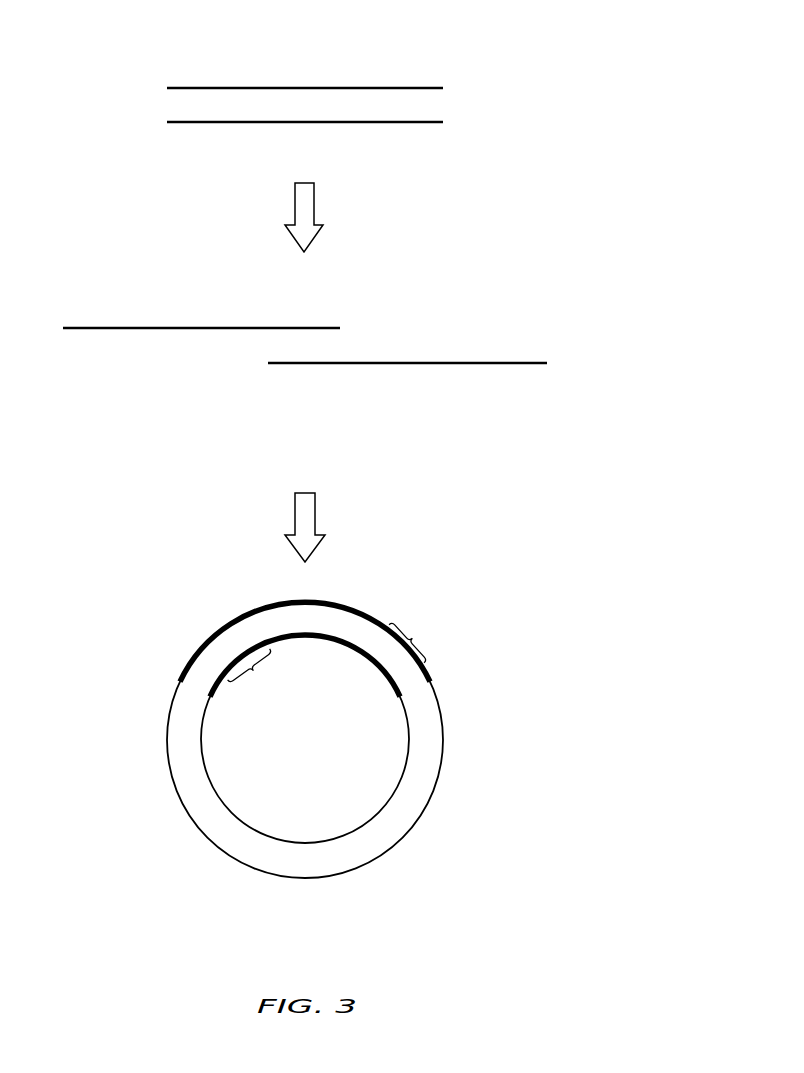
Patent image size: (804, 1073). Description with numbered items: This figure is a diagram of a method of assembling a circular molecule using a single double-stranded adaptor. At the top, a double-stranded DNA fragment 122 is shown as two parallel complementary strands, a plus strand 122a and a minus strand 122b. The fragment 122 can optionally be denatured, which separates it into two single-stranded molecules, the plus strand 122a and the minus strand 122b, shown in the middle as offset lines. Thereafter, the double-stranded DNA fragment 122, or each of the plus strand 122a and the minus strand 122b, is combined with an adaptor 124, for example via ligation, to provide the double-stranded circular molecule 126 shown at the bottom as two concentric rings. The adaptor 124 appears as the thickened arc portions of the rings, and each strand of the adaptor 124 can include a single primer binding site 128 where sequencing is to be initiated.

The double-stranded DNA fragment 122 is at (446, 51).
The plus strand 122a is at (320, 88).
The minus strand 122b is at (338, 122).
The adaptor 124 is at (342, 605).
The double-stranded circular molecule 126 is at (482, 732).
The single primer binding site 128 is at (340, 660).